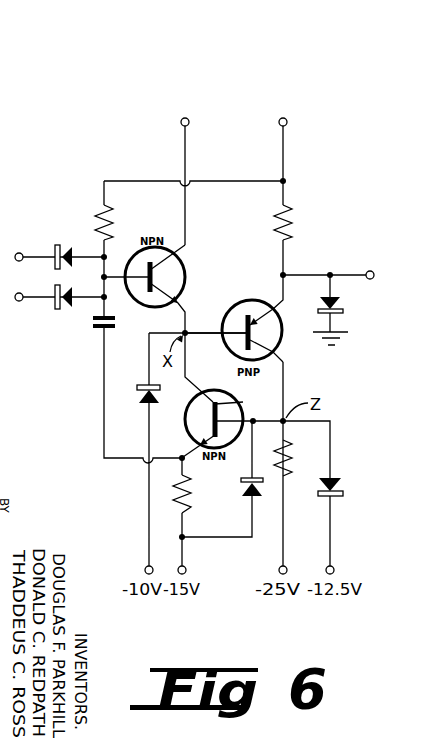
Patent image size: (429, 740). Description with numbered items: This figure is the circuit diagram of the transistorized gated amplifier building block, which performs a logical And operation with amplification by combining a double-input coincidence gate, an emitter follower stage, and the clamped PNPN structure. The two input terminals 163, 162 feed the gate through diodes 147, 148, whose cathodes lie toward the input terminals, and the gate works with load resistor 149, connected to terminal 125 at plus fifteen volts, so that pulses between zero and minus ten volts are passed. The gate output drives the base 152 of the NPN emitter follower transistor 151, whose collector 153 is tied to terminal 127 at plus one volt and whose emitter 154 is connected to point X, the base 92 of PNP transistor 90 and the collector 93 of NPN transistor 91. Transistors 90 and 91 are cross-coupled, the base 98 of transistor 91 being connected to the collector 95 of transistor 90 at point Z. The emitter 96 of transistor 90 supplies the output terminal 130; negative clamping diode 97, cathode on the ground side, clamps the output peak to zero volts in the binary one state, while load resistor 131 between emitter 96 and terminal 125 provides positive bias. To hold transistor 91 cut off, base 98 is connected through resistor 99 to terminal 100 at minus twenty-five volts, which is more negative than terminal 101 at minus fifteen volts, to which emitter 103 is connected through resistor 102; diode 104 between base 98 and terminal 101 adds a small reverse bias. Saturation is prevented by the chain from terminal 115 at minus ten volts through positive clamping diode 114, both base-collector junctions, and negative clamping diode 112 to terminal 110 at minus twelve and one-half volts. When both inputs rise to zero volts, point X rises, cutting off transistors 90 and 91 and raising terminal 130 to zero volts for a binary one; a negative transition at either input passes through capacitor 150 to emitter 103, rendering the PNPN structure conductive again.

The terminal 127 is at (190, 122).
The terminal 125 is at (287, 122).
The load resistor 149 is at (116, 226).
The load resistor 131 is at (292, 226).
The input terminal 163 is at (19, 252).
The input terminal 162 is at (19, 301).
The diode 147 is at (52, 252).
The diode 148 is at (52, 303).
The capacitor 150 is at (98, 328).
The collector 153 is at (187, 250).
The base 152 is at (144, 306).
The emitter follower transistor 151 is at (190, 274).
The emitter 154 is at (159, 296).
The PNP transistor 90 is at (246, 299).
The base 92 is at (225, 320).
The emitter 96 is at (255, 306).
The collector 95 is at (283, 340).
The output terminal 130 is at (367, 270).
The negative clamping diode 97 is at (340, 316).
The collector 93 is at (215, 421).
The NPN transistor 91 is at (204, 386).
The base 98 is at (243, 402).
The emitter 103 is at (185, 427).
The positive clamping diode 114 is at (140, 384).
The terminal 115 is at (143, 570).
The resistor 102 is at (187, 494).
The terminal 101 is at (188, 570).
The diode 104 is at (265, 489).
The resistor 99 is at (293, 465).
The terminal 100 is at (288, 570).
The negative clamping diode 112 is at (338, 503).
The terminal 110 is at (336, 570).